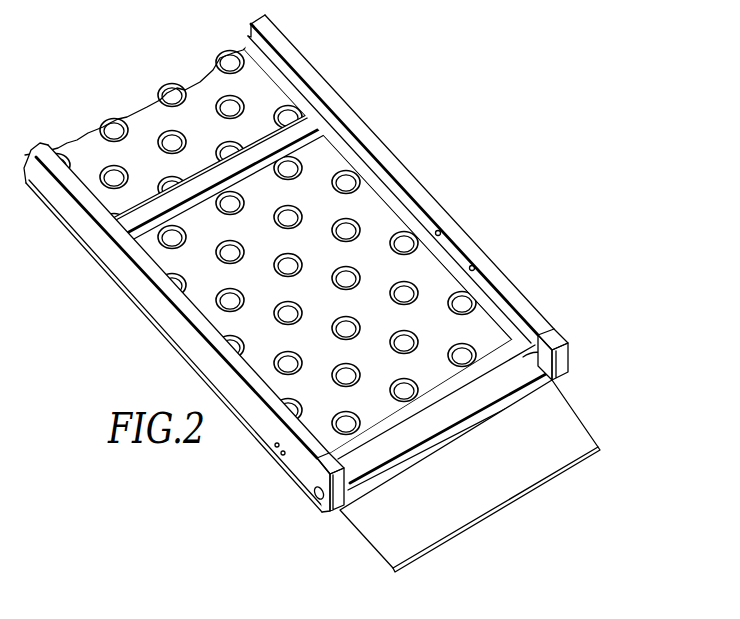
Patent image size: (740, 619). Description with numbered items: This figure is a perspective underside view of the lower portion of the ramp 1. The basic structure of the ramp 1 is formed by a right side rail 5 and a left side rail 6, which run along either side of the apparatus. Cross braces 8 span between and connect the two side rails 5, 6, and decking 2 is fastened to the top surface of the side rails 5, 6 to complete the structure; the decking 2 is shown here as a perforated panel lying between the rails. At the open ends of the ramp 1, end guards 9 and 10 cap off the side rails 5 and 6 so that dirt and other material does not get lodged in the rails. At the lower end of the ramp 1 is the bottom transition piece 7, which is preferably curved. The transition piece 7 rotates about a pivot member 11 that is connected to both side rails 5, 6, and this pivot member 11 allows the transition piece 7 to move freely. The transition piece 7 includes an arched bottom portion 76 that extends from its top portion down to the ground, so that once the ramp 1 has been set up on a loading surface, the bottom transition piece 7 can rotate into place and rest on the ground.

The ramp 1 is at (117, 287).
The decking 2 is at (334, 163).
The right side rail 5 is at (186, 334).
The left side rail 6 is at (286, 46).
The transition piece 7 is at (499, 489).
The cross braces 8 is at (379, 427).
The end guard 9 is at (341, 510).
The end guard 10 is at (567, 357).
The pivot member 11 is at (313, 492).
The bottom portion 76 is at (612, 406).